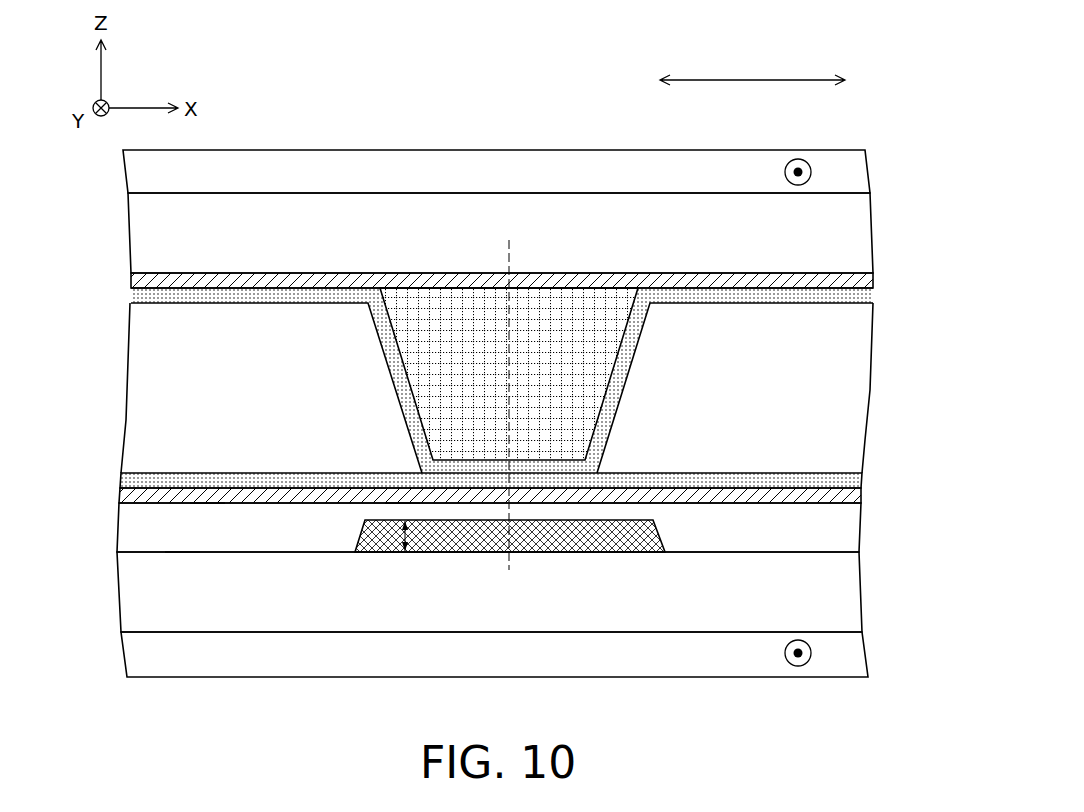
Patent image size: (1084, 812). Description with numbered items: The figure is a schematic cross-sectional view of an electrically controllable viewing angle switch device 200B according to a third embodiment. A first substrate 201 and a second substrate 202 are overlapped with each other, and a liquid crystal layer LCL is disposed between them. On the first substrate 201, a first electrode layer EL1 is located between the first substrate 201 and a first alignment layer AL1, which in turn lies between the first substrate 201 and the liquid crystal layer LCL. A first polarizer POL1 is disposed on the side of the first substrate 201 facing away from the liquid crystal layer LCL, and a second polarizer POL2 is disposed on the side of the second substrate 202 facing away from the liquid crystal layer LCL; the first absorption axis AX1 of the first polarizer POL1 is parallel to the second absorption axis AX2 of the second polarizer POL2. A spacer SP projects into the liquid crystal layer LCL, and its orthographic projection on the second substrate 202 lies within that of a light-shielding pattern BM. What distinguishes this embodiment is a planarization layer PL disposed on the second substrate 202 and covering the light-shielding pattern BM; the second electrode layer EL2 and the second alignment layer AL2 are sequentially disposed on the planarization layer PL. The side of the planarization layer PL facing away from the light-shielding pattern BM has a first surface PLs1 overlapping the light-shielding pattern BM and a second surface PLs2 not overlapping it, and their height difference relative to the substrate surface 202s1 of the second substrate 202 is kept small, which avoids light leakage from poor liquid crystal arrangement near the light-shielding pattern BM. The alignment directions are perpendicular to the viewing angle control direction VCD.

The first polarizer POL1 is at (858, 173).
The first substrate 201 is at (858, 235).
The first electrode layer EL1 is at (862, 281).
The first alignment layer AL1 is at (862, 296).
The spacer SP is at (457, 322).
The liquid crystal layer LCL is at (862, 398).
The second alignment layer AL2 is at (858, 480).
The second electrode layer EL2 is at (858, 496).
The planarization layer PL is at (852, 533).
The light-shielding pattern BM is at (575, 540).
The second substrate 202 is at (852, 578).
The second polarizer POL2 is at (852, 643).
The first absorption axis AX1 is at (811, 172).
The second absorption axis AX2 is at (785, 655).
The viewing angle control direction VCD is at (752, 68).
The first surface of the planarization layer PLs1 is at (402, 502).
The second surface of the planarization layer PLs2 is at (207, 502).
The substrate surface 202s1 is at (182, 550).
The electrically controllable viewing angle switch device 200B is at (908, 730).